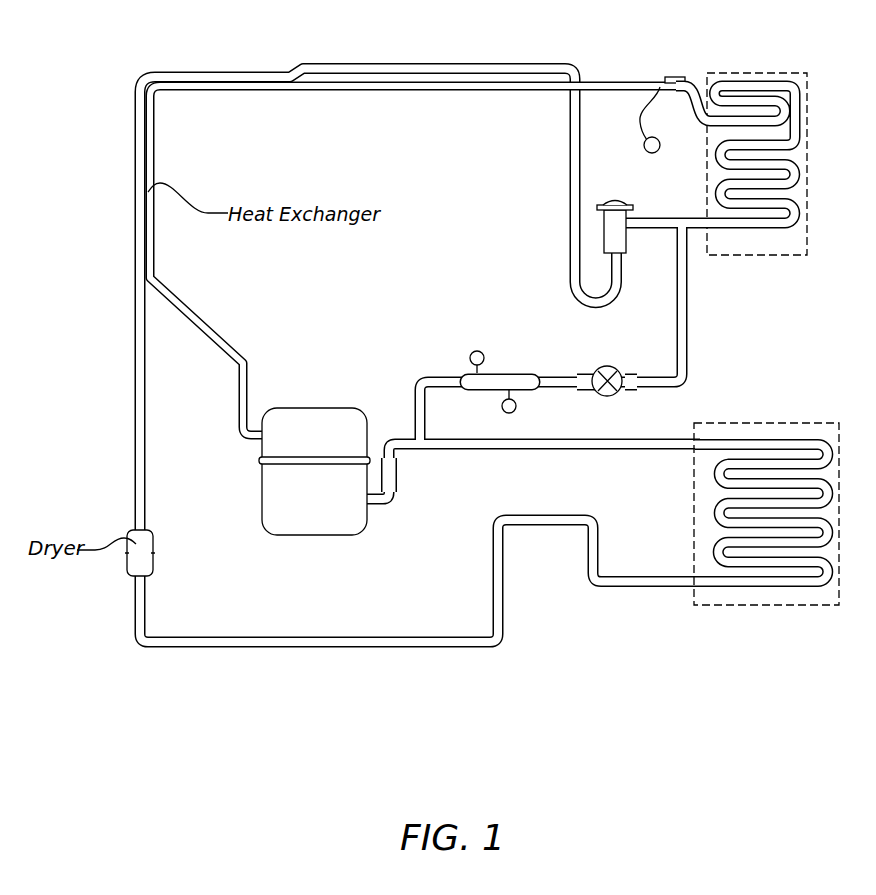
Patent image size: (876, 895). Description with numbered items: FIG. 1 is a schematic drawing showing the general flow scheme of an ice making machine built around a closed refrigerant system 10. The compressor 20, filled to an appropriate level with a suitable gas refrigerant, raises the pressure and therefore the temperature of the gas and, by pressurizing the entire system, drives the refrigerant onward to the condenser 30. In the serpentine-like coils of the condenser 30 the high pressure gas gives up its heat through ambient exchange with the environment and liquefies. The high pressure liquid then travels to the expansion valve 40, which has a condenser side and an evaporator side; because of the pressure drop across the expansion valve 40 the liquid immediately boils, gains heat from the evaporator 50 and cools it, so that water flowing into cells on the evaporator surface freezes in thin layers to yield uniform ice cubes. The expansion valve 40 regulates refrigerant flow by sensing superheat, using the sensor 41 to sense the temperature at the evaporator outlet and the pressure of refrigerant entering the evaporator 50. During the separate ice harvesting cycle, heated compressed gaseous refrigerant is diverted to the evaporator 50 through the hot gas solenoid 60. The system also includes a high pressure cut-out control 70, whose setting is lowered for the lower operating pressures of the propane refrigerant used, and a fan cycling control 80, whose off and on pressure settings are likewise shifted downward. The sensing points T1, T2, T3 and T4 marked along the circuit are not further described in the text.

The closed refrigerant system 10 is at (307, 690).
The compressor 20 is at (310, 408).
The condenser 30 is at (778, 432).
The expansion valve 40 is at (614, 233).
The sensor 41 is at (645, 152).
The evaporator 50 is at (752, 74).
The hot gas solenoid 60 is at (598, 366).
The high pressure cut-out control 70 is at (475, 351).
The fan cycling control 80 is at (516, 409).
The temperature sensor T1 is at (644, 581).
The temperature sensor T2 is at (392, 460).
The temperature sensor T3 is at (693, 230).
The temperature sensor T4 is at (642, 86).